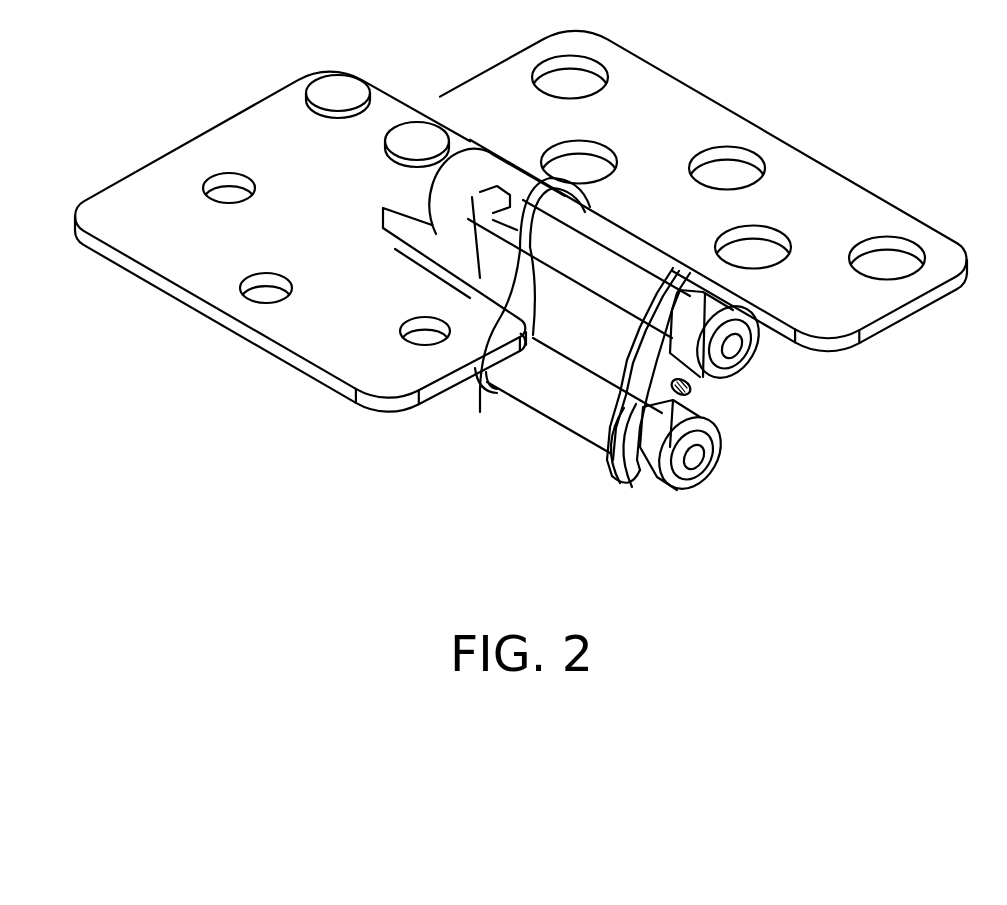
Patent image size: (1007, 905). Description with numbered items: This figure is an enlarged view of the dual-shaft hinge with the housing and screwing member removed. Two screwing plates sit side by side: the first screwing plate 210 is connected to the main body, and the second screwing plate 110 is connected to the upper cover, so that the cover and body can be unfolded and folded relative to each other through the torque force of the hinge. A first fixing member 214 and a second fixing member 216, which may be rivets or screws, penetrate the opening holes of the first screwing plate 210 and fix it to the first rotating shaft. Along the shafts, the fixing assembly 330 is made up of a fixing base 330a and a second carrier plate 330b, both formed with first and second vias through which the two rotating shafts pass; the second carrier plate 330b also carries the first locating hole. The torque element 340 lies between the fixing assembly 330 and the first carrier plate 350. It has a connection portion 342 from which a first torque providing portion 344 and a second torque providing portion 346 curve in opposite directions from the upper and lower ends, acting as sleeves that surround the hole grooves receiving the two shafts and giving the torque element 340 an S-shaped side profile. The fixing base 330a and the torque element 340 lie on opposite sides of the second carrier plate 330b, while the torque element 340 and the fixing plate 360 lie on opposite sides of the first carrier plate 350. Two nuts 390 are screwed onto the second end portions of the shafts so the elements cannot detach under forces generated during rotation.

The second screwing plate 110 is at (667, 102).
The first screwing plate 210 is at (228, 137).
The first fixing member 214 is at (334, 90).
The second fixing member 216 is at (427, 137).
The fixing assembly 330 is at (428, 323).
The fixing base 330a is at (490, 262).
The second carrier plate 330b is at (480, 412).
The torque element 340 is at (670, 317).
The connection portion 342 is at (668, 410).
The first torque providing portion 344 is at (643, 280).
The second torque providing portion 346 is at (697, 443).
The first carrier plate 350 is at (613, 440).
The fixing plate 360 is at (625, 465).
The nuts 390 is at (657, 482).